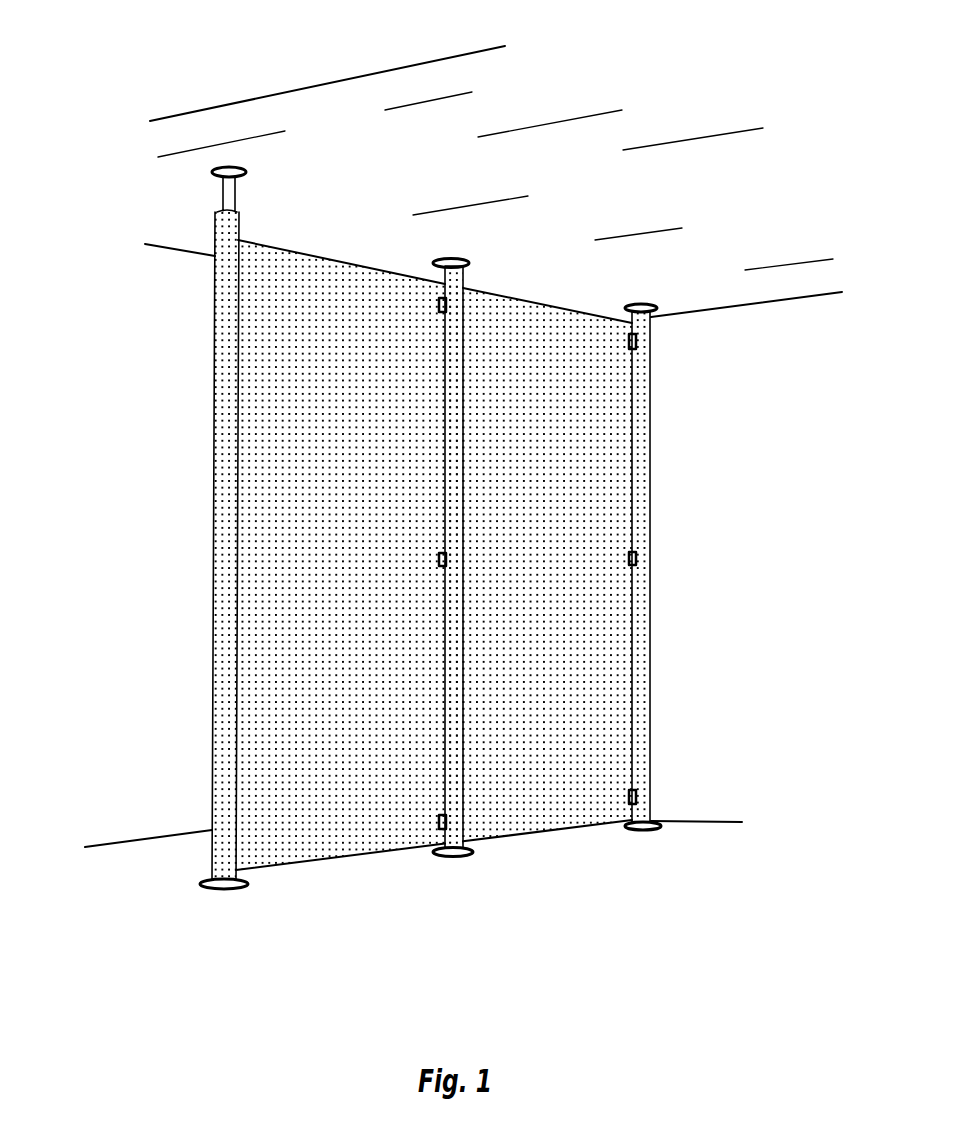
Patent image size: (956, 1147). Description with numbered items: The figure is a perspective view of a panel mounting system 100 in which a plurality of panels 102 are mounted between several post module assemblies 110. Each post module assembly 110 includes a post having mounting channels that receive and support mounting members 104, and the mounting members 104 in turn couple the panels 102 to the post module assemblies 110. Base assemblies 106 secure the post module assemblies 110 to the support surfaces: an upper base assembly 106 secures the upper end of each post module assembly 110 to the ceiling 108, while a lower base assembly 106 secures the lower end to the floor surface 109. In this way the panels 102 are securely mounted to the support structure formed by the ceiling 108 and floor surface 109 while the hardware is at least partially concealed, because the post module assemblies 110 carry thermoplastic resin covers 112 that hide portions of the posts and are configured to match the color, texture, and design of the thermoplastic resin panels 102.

The panel mounting system 100 is at (135, 371).
The panel 102 is at (331, 850).
The mounting member 104 is at (637, 342).
The base assembly 106 is at (214, 160).
The ceiling 108 is at (324, 98).
The floor surface 109 is at (605, 848).
The post module assembly 110 is at (421, 528).
The cover 112 is at (225, 472).